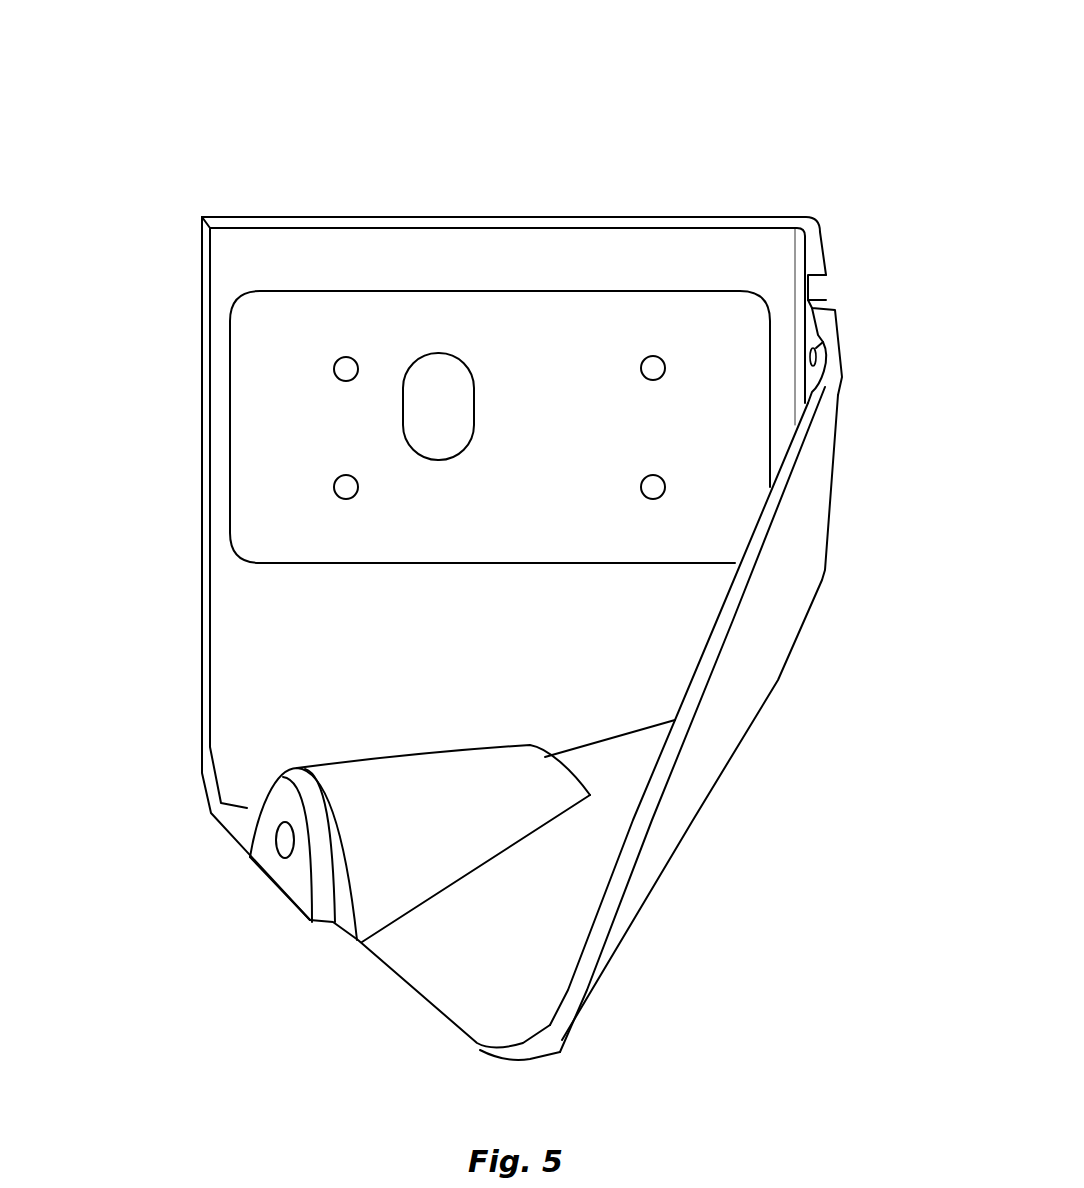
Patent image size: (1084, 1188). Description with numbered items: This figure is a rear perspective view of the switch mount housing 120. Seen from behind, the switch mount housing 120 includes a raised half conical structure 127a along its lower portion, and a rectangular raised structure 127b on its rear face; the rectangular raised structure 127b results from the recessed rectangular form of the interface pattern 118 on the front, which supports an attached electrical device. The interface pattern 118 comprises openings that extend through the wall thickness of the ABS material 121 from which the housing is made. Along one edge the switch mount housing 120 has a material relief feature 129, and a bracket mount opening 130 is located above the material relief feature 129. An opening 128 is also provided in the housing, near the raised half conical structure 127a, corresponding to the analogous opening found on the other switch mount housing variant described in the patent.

The switch mount housing 120 is at (548, 135).
The rectangular raised structure 127b is at (514, 307).
The interface pattern 118 is at (583, 348).
The material relief feature 129 is at (830, 300).
The bracket mount opening 130 is at (810, 357).
The ABS material 121 is at (737, 660).
The raised half conical structure 127a is at (394, 775).
The opening 128 is at (285, 858).